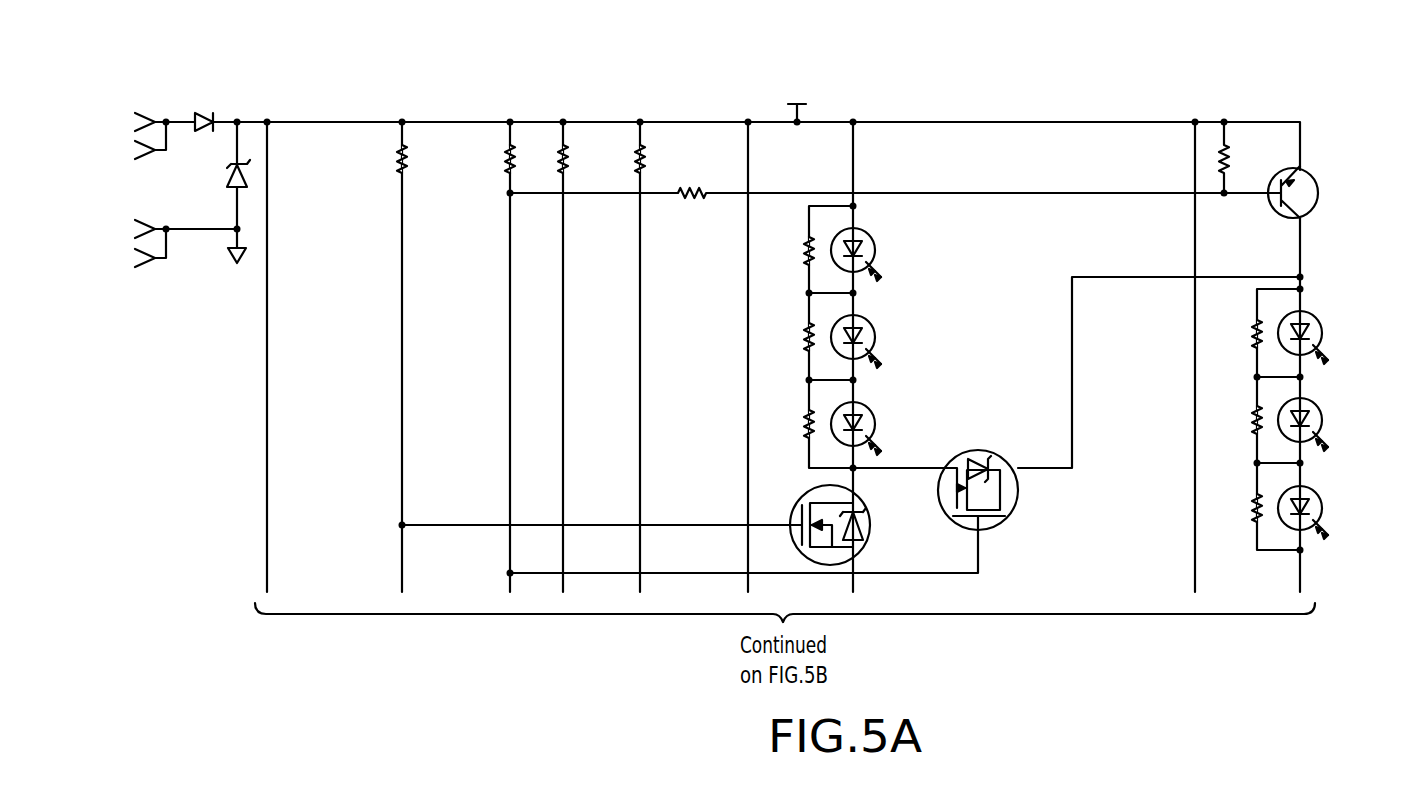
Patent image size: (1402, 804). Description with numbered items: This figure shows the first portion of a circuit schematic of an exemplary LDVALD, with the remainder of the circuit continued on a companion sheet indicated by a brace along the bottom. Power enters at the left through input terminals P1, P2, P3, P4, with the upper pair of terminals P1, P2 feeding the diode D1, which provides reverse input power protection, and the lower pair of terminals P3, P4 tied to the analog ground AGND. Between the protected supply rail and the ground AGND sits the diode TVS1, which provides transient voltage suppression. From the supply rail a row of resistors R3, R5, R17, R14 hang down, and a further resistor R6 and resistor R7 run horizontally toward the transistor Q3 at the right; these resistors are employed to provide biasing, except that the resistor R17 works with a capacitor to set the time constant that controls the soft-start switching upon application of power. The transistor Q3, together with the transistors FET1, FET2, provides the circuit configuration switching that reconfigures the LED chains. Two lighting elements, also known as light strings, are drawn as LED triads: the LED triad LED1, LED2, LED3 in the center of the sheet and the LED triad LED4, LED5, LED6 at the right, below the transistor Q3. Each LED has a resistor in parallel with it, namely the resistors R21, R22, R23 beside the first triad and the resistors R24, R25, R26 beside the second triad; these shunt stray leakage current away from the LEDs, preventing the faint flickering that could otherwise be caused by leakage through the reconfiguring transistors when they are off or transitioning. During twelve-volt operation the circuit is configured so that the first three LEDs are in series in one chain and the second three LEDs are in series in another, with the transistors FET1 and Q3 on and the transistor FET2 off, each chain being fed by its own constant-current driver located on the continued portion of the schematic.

The connector pin P1 is at (138, 122).
The connector pin P2 is at (138, 144).
The connector pin P3 is at (173, 229).
The connector pin P4 is at (138, 251).
The diode D1 is at (201, 104).
The diode TVS1 is at (214, 175).
The analog ground AGND is at (237, 264).
The resistor R3 is at (417, 160).
The resistor R5 is at (525, 160).
The resistor R17 is at (583, 160).
The resistor R14 is at (659, 160).
The resistor R6 is at (867, 210).
The resistor R7 is at (1238, 157).
The transistor Q3 is at (1287, 192).
The resistor R21 is at (789, 243).
The resistor R22 is at (788, 329).
The resistor R23 is at (788, 416).
The LED LED1 is at (878, 254).
The LED LED2 is at (878, 341).
The LED LED3 is at (878, 428).
The transistor FET1 is at (661, 525).
The transistor FET2 is at (789, 511).
The resistor R24 is at (1236, 333).
The resistor R25 is at (1236, 420).
The resistor R26 is at (1236, 508).
The LED LED4 is at (1324, 337).
The LED LED5 is at (1324, 424).
The LED LED6 is at (1324, 512).